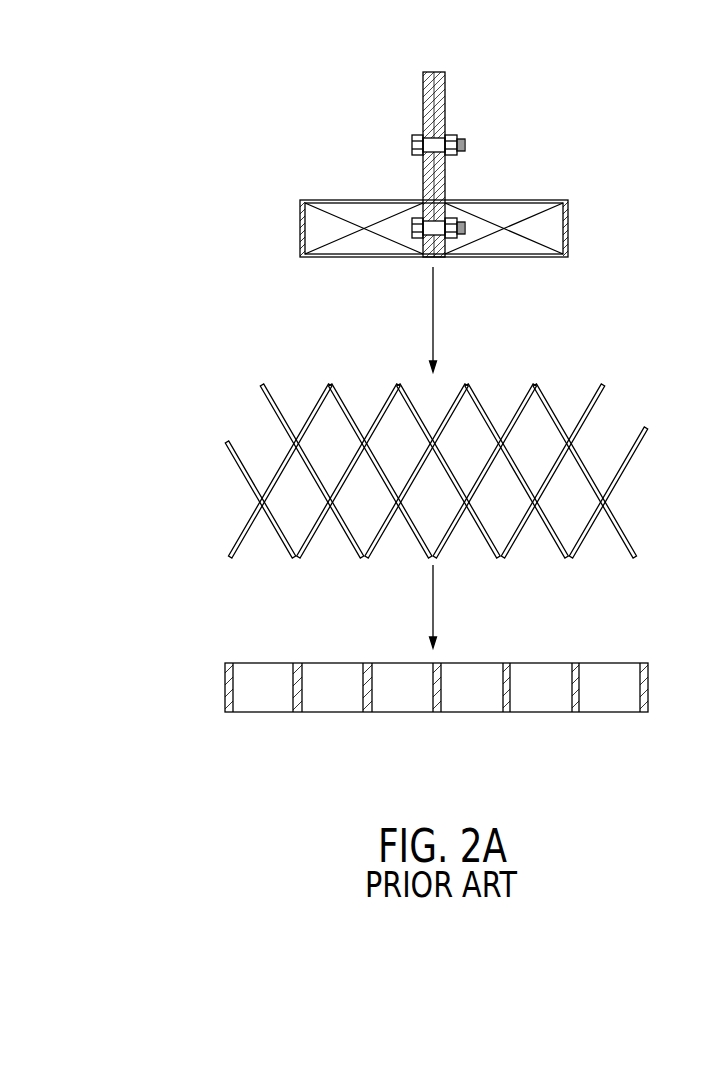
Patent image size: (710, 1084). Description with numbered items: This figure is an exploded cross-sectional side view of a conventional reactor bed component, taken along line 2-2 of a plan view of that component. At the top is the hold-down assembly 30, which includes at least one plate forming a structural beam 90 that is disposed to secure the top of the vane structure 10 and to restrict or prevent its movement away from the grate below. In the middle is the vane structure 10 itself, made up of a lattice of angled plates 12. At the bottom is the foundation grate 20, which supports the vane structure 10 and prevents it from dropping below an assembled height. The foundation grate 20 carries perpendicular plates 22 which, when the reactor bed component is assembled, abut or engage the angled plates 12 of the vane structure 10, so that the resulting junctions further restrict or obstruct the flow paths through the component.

The hold-down assembly 30 is at (516, 116).
The structural beam 90 is at (542, 200).
The vane structure 10 is at (400, 445).
The angled plate 12 is at (352, 410).
The foundation grate 20 is at (390, 716).
The perpendicular plate 22 is at (362, 682).
The rail body 2 is at (535, 712).